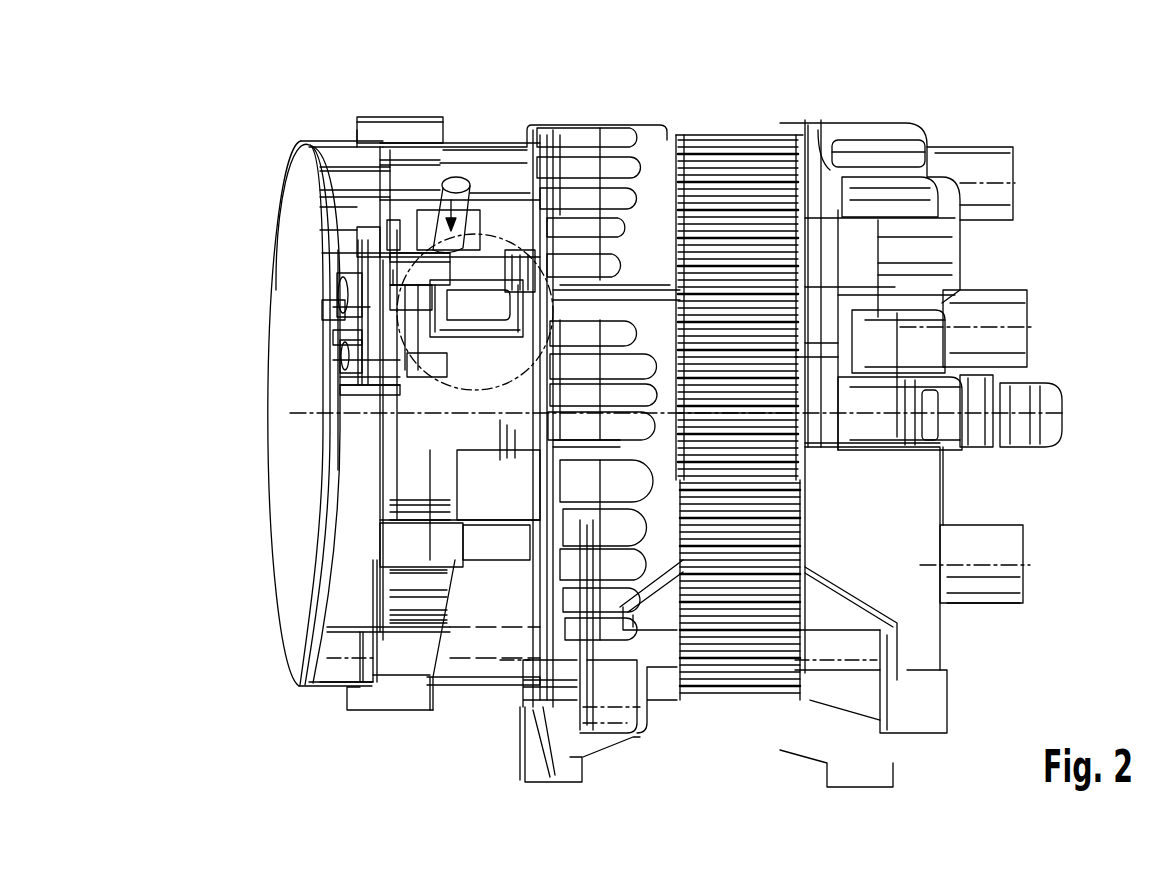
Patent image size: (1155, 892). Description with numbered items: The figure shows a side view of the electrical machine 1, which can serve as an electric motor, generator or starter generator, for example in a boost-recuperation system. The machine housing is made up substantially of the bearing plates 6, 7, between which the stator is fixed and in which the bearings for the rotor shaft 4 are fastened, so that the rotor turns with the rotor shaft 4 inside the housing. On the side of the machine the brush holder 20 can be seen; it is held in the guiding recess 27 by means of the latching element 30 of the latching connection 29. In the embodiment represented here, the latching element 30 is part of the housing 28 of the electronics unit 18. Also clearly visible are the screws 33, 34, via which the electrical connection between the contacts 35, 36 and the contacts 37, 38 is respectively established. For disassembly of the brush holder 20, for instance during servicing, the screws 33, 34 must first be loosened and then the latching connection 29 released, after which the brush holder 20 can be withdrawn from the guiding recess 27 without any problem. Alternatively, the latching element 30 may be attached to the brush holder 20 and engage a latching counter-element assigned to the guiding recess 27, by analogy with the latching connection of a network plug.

The electrical machine 1 is at (712, 97).
The rotor shaft 4 is at (1030, 405).
The bearing plate 6 is at (620, 563).
The bearing plate 7 is at (910, 548).
The electronics unit 18 is at (283, 112).
The brush holder 20 is at (440, 253).
The guiding recess 27 is at (385, 388).
The housing 28 is at (390, 262).
The latching connection 29 is at (527, 240).
The latching element 30 is at (523, 255).
The screw 33 is at (345, 355).
The screw 34 is at (340, 280).
The contact 35 is at (340, 335).
The contact 36 is at (345, 312).
The contact 37 is at (335, 375).
The contact 38 is at (390, 286).